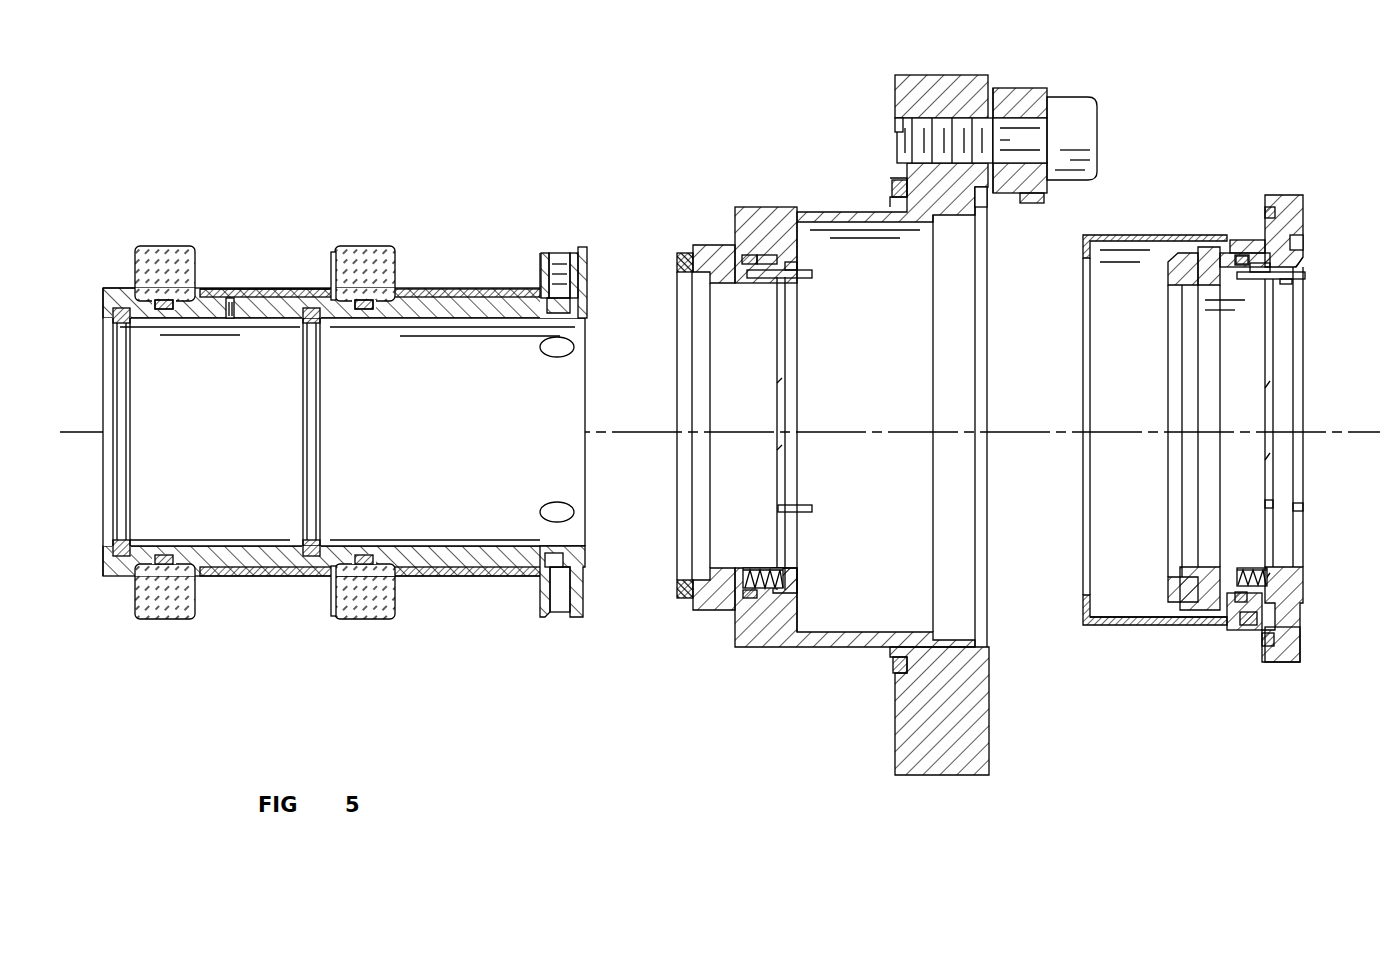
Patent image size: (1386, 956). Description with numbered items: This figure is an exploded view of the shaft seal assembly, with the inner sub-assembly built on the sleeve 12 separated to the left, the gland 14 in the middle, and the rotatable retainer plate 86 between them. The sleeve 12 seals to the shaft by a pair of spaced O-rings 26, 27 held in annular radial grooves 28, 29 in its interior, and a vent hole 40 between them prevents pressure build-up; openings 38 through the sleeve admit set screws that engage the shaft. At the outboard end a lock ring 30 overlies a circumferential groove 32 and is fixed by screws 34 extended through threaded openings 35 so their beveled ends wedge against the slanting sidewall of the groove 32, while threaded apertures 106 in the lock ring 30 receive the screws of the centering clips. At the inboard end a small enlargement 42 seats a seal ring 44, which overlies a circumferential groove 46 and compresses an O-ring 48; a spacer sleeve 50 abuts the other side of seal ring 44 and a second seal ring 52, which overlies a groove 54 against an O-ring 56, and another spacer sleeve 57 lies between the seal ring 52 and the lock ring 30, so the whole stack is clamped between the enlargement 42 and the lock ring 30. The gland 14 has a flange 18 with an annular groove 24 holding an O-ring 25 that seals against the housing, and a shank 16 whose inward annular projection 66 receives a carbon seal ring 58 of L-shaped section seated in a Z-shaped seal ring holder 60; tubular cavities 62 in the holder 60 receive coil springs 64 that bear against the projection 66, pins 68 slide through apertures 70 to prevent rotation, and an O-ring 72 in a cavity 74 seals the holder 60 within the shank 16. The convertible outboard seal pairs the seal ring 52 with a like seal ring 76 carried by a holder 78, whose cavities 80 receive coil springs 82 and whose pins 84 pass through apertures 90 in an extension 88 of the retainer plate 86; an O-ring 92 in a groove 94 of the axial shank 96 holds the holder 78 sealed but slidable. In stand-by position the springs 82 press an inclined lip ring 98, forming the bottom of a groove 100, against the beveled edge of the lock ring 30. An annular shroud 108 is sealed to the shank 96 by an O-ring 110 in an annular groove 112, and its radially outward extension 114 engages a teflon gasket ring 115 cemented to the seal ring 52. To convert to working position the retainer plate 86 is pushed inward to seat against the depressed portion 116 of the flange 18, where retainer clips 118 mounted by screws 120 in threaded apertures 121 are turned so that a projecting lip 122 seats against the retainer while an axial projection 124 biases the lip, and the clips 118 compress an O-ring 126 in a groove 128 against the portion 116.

The sleeve 12 is at (452, 556).
The gland 14 is at (906, 74).
The shank 16 is at (737, 215).
The flange 18 is at (954, 117).
The annular groove 24 is at (891, 190).
The O-ring 25 is at (895, 180).
The O-ring 26 is at (116, 540).
The O-ring 27 is at (306, 540).
The annular radial groove 28 is at (128, 522).
The annular radial groove 29 is at (320, 522).
The lock ring 30 is at (587, 280).
The circumferential groove 32 is at (565, 558).
The screws 34 is at (556, 258).
The threaded openings 35 is at (574, 256).
The openings 38 is at (552, 356).
The vent hole 40 is at (233, 315).
The enlargement 42 is at (127, 290).
The seal ring 44 is at (166, 252).
The circumferential groove 46 is at (172, 312).
The O-ring 48 is at (162, 312).
The spacer sleeve 50 is at (288, 296).
The seal ring 52 is at (372, 252).
The circumferential groove 54 is at (372, 312).
The O-ring 56 is at (362, 312).
The spacer sleeve 57 is at (492, 295).
The seal ring 58 is at (680, 255).
The seal ring holder 60 is at (714, 250).
The tubular cavities 62 is at (748, 568).
The coil spring 64 is at (783, 391).
The inward annular projection 66 is at (797, 287).
The pin 68 is at (812, 276).
The aperture 70 is at (797, 269).
The O-ring 72 is at (748, 254).
The cavity 74 is at (766, 254).
The seal ring 76 is at (1170, 262).
The holder 78 is at (1206, 250).
The cavities 80 is at (1240, 570).
The coil spring 82 is at (1271, 385).
The pin 84 is at (1306, 276).
The retainer plate 86 is at (1308, 198).
The extension 88 is at (1304, 576).
The apertures 90 is at (1300, 284).
The O-ring 92 is at (1240, 264).
The groove 94 is at (1258, 266).
The axial shank 96 is at (1226, 256).
The lip ring 98 is at (1305, 260).
The groove 100 is at (1300, 240).
The threaded apertures 106 is at (566, 588).
The annular shroud 108 is at (1157, 626).
The O-ring 110 is at (1241, 250).
The annular groove 112 is at (1269, 206).
The radially outward extension 114 is at (1084, 240).
The gasket ring 115 is at (333, 256).
The depressed portion 116 is at (985, 205).
The retainer clips 118 is at (1035, 86).
The screws 120 is at (1087, 120).
The threaded apertures 121 is at (896, 126).
The projecting lip 122 is at (1044, 196).
The axial projection 124 is at (993, 112).
The O-ring 126 is at (1262, 638).
The groove 128 is at (1302, 650).